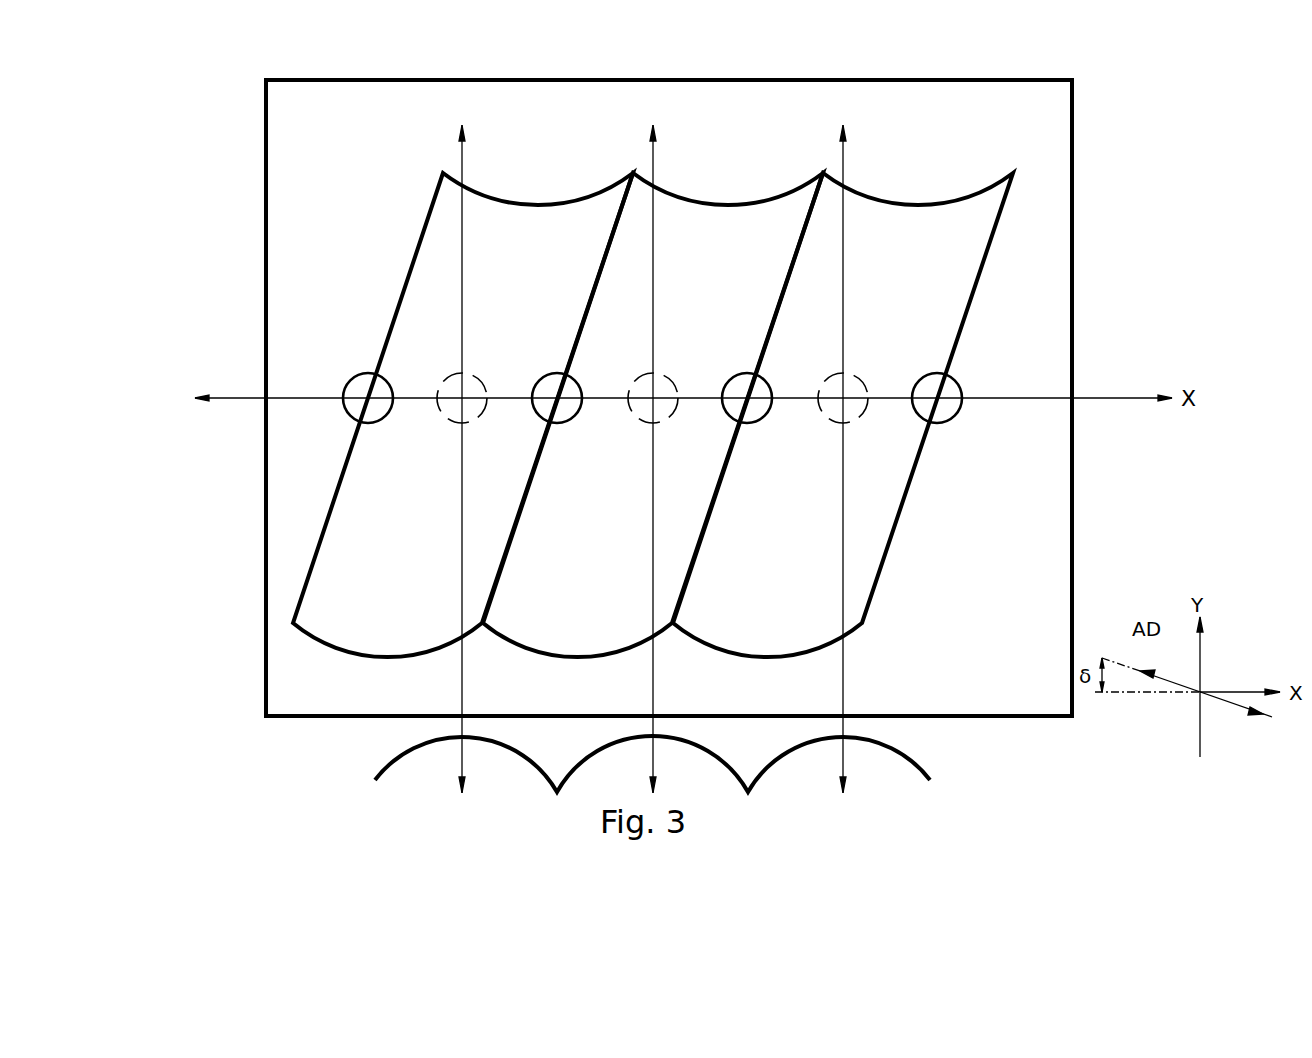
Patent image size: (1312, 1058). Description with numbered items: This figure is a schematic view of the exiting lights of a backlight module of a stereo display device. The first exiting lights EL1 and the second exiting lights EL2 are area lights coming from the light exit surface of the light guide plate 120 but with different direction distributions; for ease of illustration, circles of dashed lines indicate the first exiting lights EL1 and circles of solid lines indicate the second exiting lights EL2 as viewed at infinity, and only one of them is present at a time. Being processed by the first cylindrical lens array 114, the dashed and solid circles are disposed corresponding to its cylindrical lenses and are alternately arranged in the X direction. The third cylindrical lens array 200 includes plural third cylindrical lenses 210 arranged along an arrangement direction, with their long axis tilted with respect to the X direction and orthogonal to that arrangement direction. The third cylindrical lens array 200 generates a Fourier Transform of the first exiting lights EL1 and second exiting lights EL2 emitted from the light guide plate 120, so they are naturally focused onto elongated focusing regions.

The first cylindrical lens array 114 is at (393, 764).
The light guide plate 120 is at (1020, 503).
The third cylindrical lens array 200 is at (555, 415).
The third cylindrical lens 210 is at (357, 508).
The first exiting light EL1 is at (453, 388).
The second exiting light EL2 is at (547, 386).